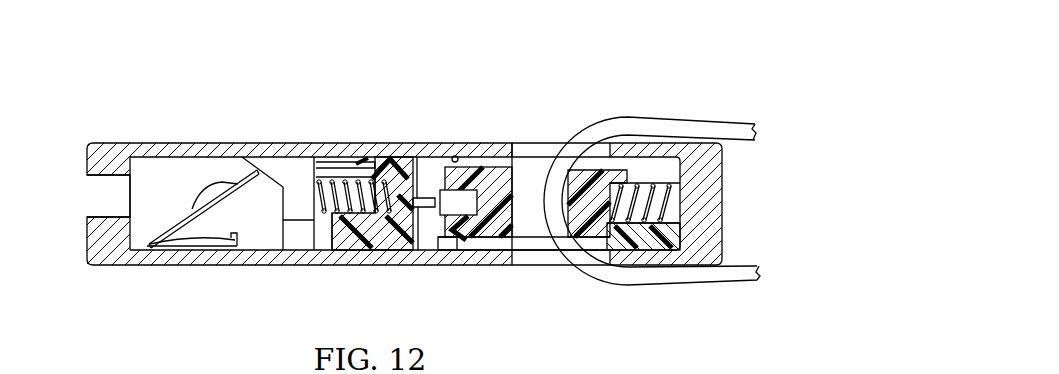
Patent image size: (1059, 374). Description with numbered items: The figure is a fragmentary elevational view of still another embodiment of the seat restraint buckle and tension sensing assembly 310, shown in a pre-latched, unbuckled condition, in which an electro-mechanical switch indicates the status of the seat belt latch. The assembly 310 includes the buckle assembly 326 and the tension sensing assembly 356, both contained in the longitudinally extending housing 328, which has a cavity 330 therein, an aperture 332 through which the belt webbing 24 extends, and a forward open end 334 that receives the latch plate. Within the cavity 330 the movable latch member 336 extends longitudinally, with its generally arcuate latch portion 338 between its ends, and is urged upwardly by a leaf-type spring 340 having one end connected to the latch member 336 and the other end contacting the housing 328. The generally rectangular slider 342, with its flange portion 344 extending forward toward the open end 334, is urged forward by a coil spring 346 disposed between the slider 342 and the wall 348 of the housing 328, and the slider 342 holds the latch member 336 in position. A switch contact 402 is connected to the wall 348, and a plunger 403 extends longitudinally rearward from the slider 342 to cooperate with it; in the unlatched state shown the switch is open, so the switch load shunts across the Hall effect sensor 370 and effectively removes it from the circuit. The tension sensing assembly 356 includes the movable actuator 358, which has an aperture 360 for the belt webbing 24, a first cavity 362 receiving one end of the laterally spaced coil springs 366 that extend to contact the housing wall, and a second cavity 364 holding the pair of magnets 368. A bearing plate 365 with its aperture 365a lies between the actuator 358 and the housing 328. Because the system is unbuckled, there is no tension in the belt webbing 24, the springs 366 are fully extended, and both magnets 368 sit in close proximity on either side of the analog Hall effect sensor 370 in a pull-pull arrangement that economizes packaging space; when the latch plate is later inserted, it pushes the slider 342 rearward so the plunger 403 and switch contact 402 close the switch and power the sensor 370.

The seat restraint buckle and tension sensing assembly 310 is at (80, 102).
The buckle assembly 326 is at (154, 140).
The housing 328 is at (190, 150).
The open end 334 is at (108, 182).
The latch member 336 is at (170, 225).
The latch portion 338 is at (225, 185).
The spring 340 is at (191, 246).
The slider 342 is at (302, 170).
The flange portion 344 is at (273, 160).
The spring 346 is at (334, 192).
The wall 348 is at (400, 160).
The Hall effect sensor 370 is at (415, 178).
The switch contact 402 is at (372, 160).
The plunger 403 is at (327, 168).
The cavity 330 is at (455, 156).
The aperture 332 is at (512, 157).
The tension sensing assembly 356 is at (488, 159).
The actuator 358 is at (478, 228).
The aperture 360 is at (513, 182).
The second cavity 364 is at (452, 238).
The aperture 365a is at (507, 240).
The magnets 368 is at (447, 210).
The first cavity 362 is at (624, 227).
The bearing plate 365 is at (664, 243).
The springs 366 is at (645, 185).
The belt webbing 24 is at (722, 125).